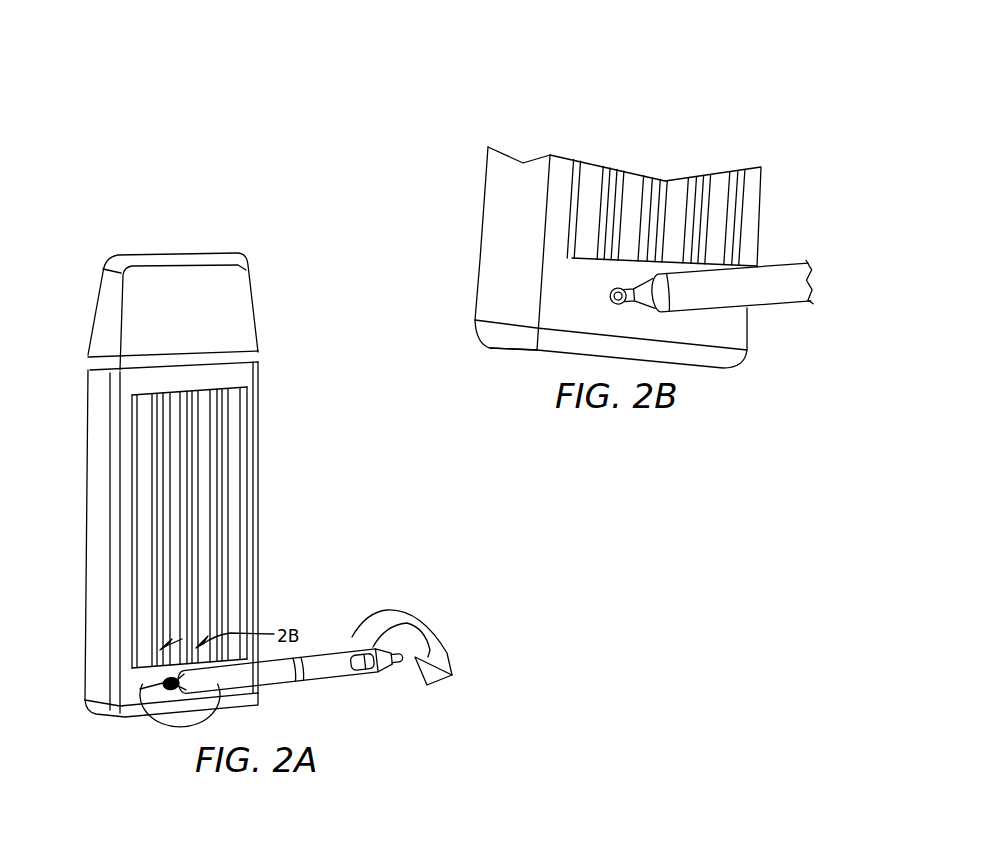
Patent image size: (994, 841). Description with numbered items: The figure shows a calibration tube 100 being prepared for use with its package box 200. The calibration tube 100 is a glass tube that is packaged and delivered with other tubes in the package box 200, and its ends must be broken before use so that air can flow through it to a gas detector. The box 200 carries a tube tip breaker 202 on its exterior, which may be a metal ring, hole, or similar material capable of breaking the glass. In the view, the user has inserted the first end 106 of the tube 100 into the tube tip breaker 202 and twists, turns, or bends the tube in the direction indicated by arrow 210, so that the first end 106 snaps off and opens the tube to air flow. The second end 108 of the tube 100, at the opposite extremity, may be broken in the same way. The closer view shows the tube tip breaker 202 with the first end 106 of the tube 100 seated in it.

In FIG. 2A, the calibration tube 100 is at (295, 681).
In FIG. 2B, the calibration tube 100 is at (777, 308).
In FIG. 2A, the first end 106 is at (163, 690).
In FIG. 2B, the first end 106 is at (610, 297).
In FIG. 2A, the second end 108 is at (414, 670).
In FIG. 2A, the package box 200 is at (253, 496).
In FIG. 2B, the package box 200 is at (507, 220).
In FIG. 2A, the tube tip breaker 202 is at (140, 690).
In FIG. 2B, the tube tip breaker 202 is at (630, 307).
In FIG. 2A, the arrow 210 is at (433, 638).